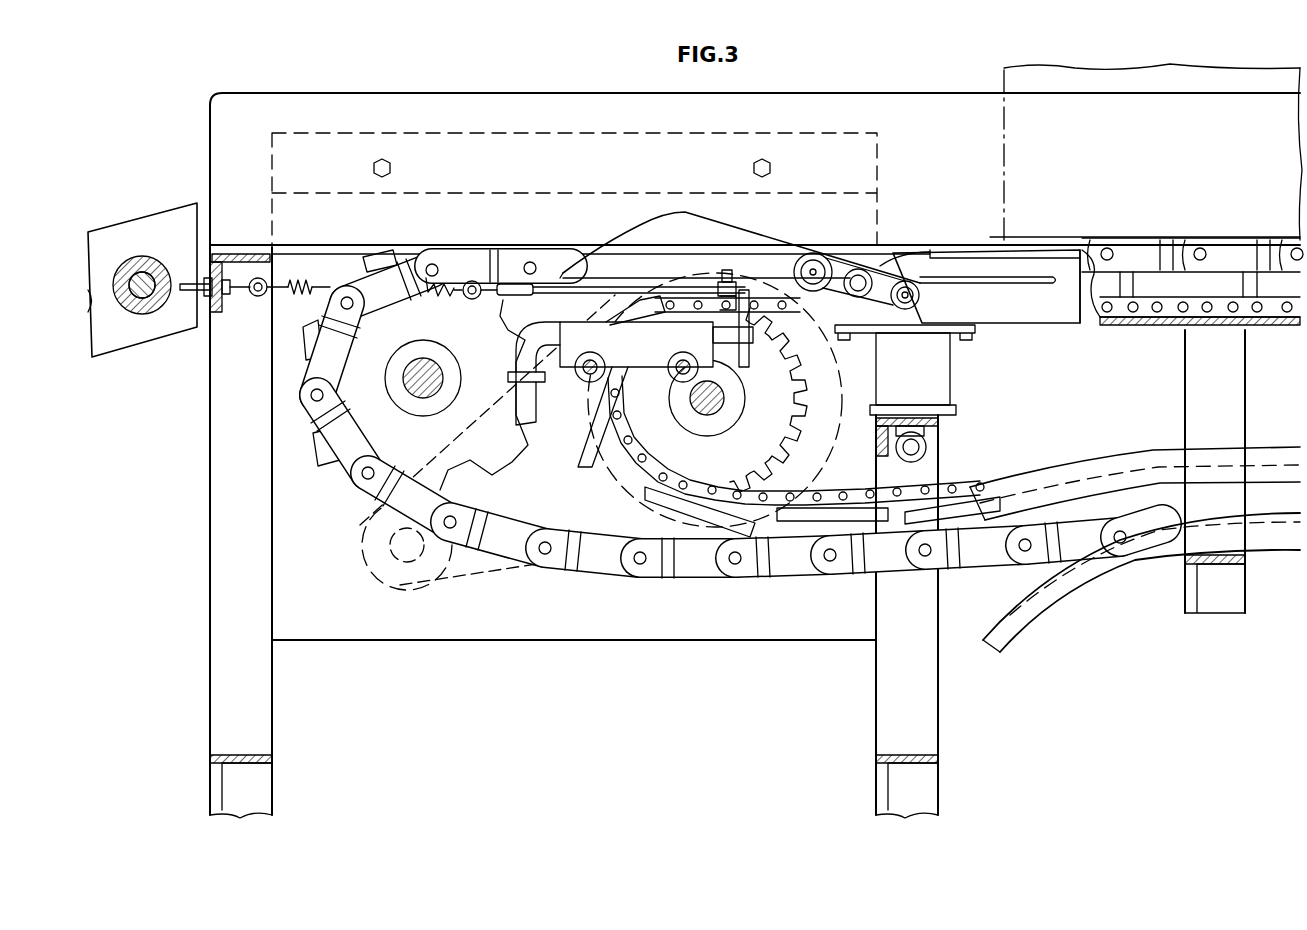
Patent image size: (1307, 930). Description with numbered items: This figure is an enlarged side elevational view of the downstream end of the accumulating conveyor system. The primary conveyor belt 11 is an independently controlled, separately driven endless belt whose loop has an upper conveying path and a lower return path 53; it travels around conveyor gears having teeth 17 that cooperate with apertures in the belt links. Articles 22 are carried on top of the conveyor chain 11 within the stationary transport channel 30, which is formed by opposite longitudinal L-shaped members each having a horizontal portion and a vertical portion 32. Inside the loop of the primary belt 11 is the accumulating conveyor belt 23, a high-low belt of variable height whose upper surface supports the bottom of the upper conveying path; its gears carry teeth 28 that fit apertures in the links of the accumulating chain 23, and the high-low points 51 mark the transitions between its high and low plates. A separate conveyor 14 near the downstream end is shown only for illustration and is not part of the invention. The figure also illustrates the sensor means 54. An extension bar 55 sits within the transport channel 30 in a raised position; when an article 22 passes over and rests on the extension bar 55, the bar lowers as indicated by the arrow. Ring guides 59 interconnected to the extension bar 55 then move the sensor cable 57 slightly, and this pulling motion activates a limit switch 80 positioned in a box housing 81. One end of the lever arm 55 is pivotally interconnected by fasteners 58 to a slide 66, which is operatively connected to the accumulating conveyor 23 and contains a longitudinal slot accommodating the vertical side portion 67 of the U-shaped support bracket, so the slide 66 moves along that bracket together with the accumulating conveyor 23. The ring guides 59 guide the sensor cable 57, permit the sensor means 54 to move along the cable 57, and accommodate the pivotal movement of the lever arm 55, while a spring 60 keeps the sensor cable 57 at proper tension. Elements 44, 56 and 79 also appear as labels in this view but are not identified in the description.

The primary conveyor belt 11 is at (971, 562).
The separate conveyor 14 is at (130, 220).
The teeth 17 is at (497, 460).
The articles 22 is at (1135, 145).
The accumulating conveyor belt 23 is at (966, 485).
The teeth 28 is at (786, 360).
The transport channel 30 is at (939, 72).
The vertical portion 32 is at (962, 262).
The curved guide track 44 is at (1077, 575).
The high-low points 51 is at (932, 258).
The lower return path 53 is at (843, 490).
The sensor means 54 is at (799, 205).
The extension bar 55 is at (625, 240).
The cam follower lever 56 is at (592, 263).
The sensor cable 57 is at (1033, 284).
The fasteners 58 is at (857, 268).
The ring guides 59 is at (728, 278).
The spring 60 is at (300, 282).
The slide 66 is at (1052, 305).
The vertical side portion 67 is at (1088, 268).
The frame cross member 79 is at (562, 632).
The limit switch 80 is at (704, 352).
The box housing 81 is at (568, 355).